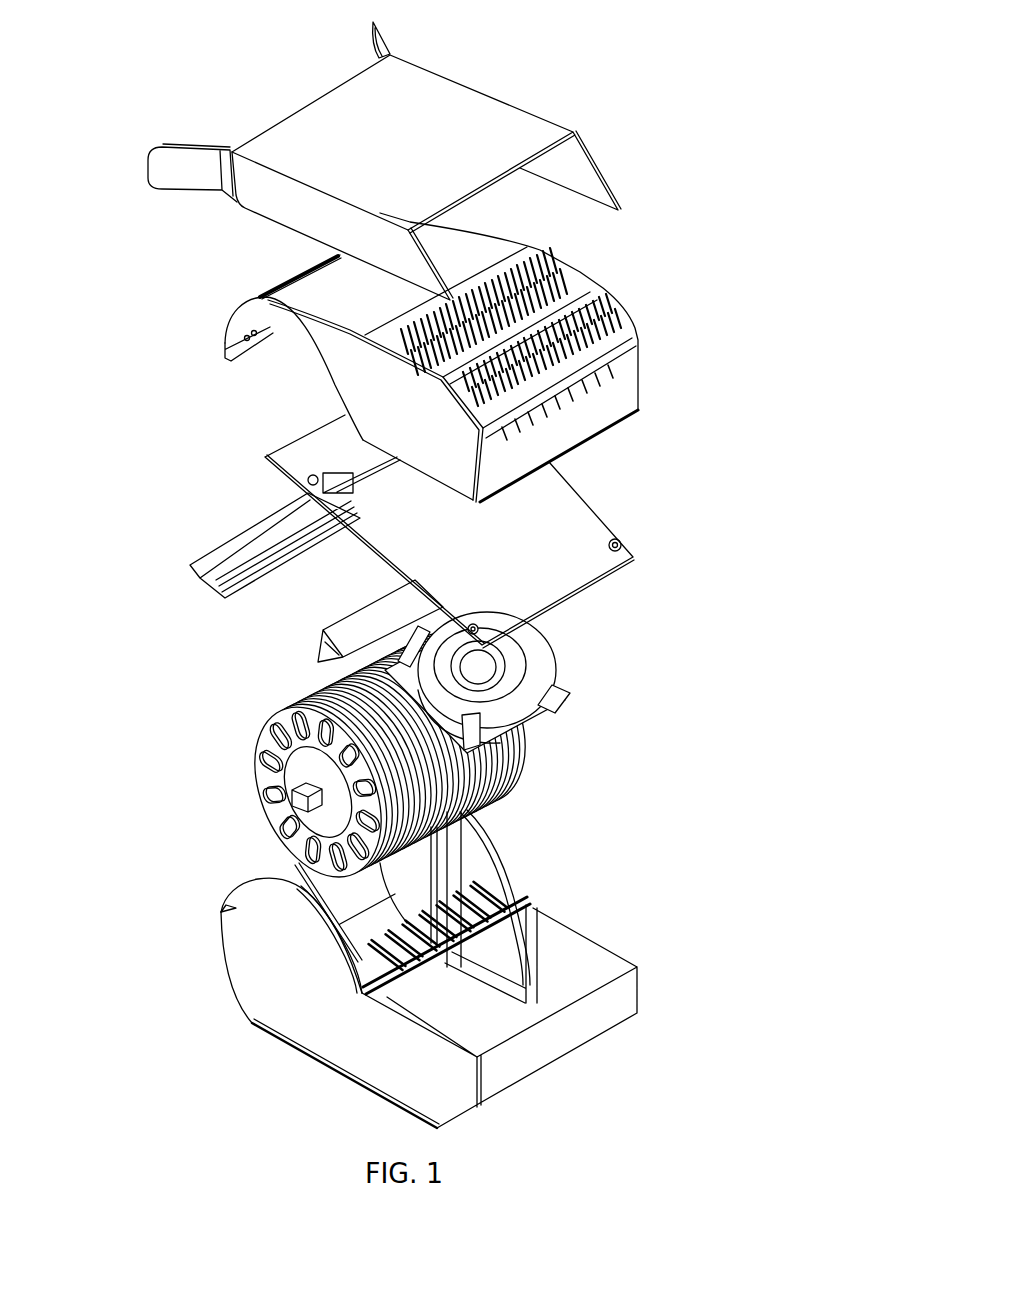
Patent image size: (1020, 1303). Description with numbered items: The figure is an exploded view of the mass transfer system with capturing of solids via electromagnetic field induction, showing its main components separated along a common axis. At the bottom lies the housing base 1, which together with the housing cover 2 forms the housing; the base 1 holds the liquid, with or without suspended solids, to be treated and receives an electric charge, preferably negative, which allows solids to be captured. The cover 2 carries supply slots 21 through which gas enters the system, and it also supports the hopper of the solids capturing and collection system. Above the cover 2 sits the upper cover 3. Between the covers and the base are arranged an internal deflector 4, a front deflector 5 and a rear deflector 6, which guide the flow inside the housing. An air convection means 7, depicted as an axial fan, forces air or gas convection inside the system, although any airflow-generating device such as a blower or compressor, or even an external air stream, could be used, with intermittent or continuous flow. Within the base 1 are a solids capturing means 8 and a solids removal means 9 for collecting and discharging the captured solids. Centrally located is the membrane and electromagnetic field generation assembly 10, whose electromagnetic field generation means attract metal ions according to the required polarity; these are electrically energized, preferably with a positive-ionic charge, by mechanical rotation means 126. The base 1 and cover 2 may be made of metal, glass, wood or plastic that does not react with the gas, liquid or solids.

The housing base 1 is at (254, 1001).
The housing cover 2 is at (499, 357).
The supply slots 21 is at (615, 310).
The upper cover 3 is at (613, 164).
The internal deflector 4 is at (645, 544).
The front deflector 5 is at (307, 642).
The rear deflector 6 is at (232, 528).
The air convection means 7 is at (555, 676).
The solids capturing means 8 is at (507, 882).
The solids removal means 9 is at (546, 901).
The membrane and electromagnetic field generation assembly 10 is at (331, 755).
The mechanical rotation means 126 is at (286, 808).